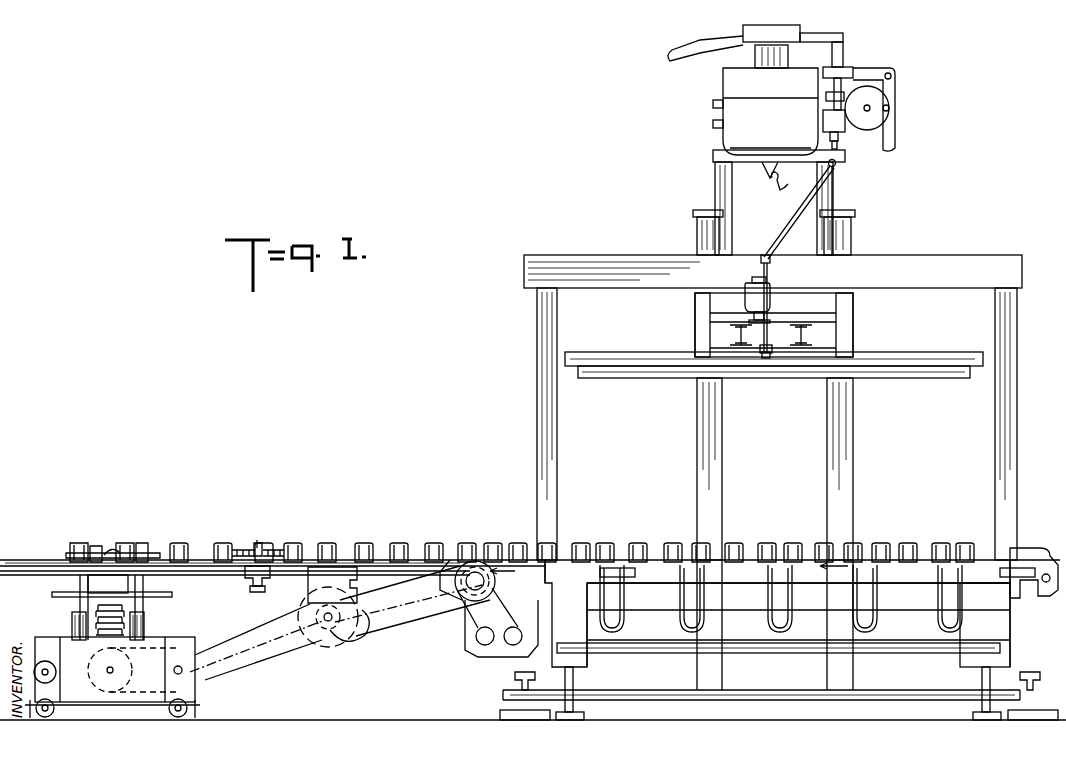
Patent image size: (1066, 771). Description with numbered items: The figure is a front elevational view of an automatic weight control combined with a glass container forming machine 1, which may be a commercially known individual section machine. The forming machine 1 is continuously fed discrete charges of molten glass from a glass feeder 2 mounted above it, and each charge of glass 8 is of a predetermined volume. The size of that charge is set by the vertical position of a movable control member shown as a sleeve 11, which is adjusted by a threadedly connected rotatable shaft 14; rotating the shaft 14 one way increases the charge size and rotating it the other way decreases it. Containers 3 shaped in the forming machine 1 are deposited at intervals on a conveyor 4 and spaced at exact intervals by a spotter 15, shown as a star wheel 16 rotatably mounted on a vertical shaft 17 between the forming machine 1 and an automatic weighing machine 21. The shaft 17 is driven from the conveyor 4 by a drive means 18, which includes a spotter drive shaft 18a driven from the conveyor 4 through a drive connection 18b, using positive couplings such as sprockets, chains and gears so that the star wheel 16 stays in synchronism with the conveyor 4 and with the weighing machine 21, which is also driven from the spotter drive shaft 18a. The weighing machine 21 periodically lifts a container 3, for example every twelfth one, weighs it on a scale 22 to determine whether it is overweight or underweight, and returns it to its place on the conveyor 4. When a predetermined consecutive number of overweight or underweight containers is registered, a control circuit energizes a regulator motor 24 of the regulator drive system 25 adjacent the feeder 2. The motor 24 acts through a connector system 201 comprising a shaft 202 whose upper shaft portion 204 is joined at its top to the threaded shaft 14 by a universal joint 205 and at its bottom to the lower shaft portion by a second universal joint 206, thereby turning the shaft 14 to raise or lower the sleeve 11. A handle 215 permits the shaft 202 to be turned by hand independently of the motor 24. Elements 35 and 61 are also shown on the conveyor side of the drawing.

The container forming machine 1 is at (930, 245).
The glass feeder 2 is at (851, 70).
The containers 3 is at (221, 545).
The conveyor 4 is at (878, 556).
The charge of glass 8 is at (779, 192).
The sleeve 11 is at (755, 60).
The rotatable shaft 14 is at (840, 146).
The spotter 15 is at (278, 548).
The star wheel 16 is at (297, 549).
The vertical shaft 17 is at (258, 543).
The drive means 18 is at (318, 650).
The spotter drive shaft 18a is at (338, 622).
The drive connection 18b is at (404, 618).
The automatic weighing machine 21 is at (192, 640).
The scale 22 is at (100, 581).
The regulator motor 24 is at (768, 291).
The regulator drive system 25 is at (733, 303).
The support plate 35 is at (160, 598).
The guide member 61 is at (128, 547).
The connector system 201 is at (750, 267).
The shaft 202 is at (828, 204).
The upper shaft portion 204 is at (828, 183).
The universal joint 205 is at (838, 163).
The universal joint 206 is at (772, 262).
The handle 215 is at (766, 355).